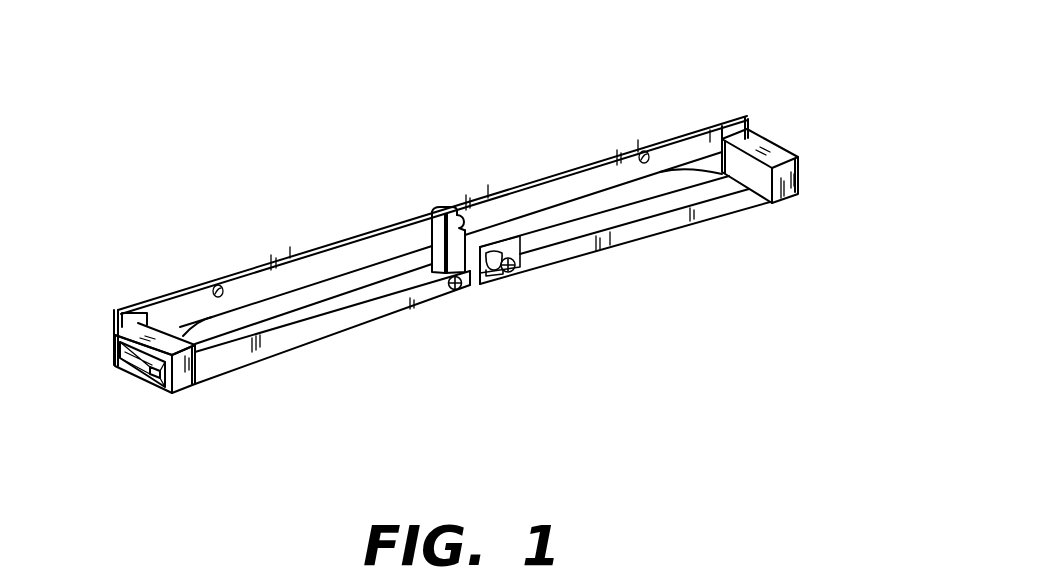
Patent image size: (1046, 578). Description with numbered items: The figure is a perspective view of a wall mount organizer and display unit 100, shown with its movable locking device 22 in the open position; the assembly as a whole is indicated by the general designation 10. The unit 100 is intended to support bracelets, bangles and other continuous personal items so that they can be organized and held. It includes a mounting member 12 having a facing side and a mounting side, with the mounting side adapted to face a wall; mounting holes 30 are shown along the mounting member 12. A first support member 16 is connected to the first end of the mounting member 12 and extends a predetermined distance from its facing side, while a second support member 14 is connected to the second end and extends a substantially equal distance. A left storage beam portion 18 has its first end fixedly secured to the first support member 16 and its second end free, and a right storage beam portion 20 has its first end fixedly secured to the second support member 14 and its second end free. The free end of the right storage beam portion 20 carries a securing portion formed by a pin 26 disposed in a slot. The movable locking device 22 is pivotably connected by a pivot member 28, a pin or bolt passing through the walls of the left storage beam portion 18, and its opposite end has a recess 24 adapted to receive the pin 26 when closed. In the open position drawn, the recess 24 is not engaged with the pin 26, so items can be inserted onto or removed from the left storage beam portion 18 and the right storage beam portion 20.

The wall mount organizer and display unit 100 is at (259, 123).
The rail mount 10 is at (748, 114).
The mounting member 12 is at (527, 182).
The second support member 14 is at (762, 140).
The first support member 16 is at (197, 387).
The left storage beam portion 18 is at (314, 333).
The right storage beam portion 20 is at (668, 222).
The movable locking device 22 is at (437, 206).
The recess 24 is at (460, 217).
The pin 26 is at (512, 277).
The pivot member 28 is at (463, 290).
The mounting hole 30 is at (221, 284).